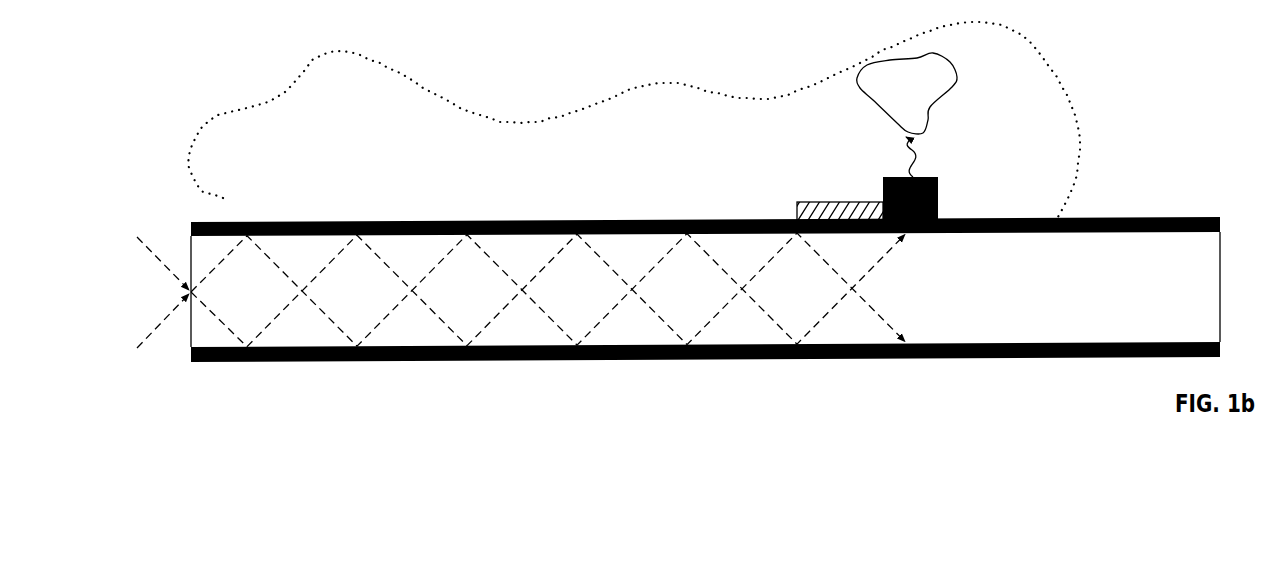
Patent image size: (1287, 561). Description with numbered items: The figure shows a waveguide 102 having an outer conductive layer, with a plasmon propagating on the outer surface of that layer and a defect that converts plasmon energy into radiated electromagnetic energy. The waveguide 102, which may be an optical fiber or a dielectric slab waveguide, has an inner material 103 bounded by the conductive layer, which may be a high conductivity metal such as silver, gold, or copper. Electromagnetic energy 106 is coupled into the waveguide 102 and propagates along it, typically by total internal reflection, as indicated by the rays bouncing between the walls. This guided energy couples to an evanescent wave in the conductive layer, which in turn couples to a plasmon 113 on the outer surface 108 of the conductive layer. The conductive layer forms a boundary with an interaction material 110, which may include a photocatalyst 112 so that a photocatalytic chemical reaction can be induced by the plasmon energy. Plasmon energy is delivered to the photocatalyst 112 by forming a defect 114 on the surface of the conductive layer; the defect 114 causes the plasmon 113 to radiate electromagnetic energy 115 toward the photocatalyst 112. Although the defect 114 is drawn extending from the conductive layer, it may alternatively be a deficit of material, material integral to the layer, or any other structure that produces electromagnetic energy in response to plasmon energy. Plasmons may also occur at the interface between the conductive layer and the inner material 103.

The waveguide 102 is at (1223, 293).
The inner material 103 is at (1124, 308).
The electromagnetic energy 106 is at (152, 335).
The outer surface 108 is at (612, 360).
The interaction material 110 is at (371, 156).
The photocatalyst 112 is at (930, 122).
The plasmon 113 is at (797, 202).
The defect 114 is at (940, 202).
The electromagnetic energy 115 is at (913, 170).